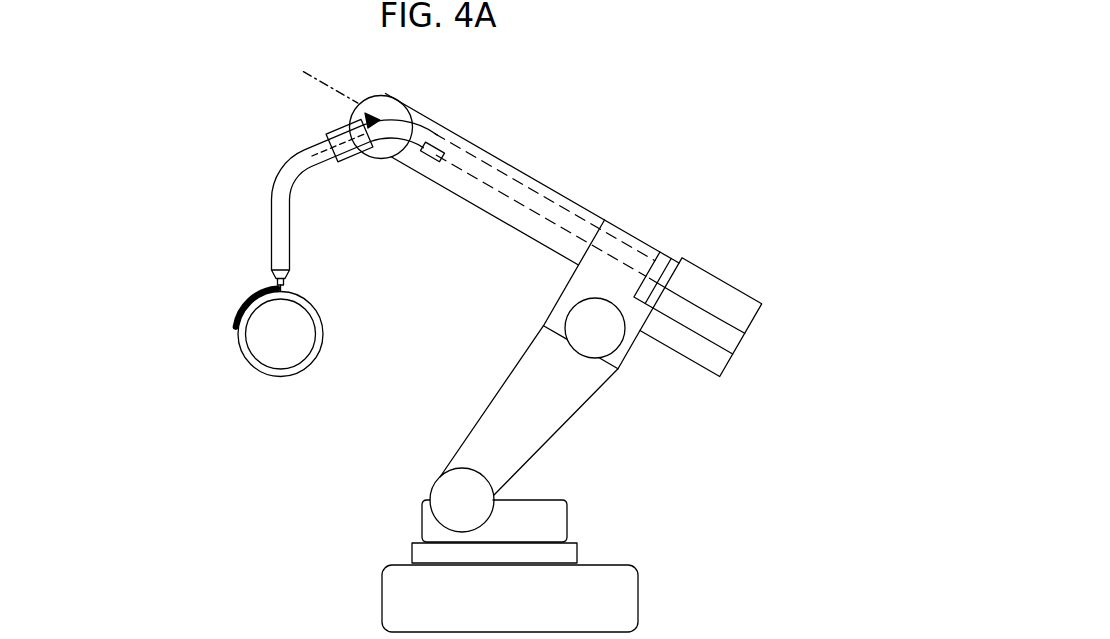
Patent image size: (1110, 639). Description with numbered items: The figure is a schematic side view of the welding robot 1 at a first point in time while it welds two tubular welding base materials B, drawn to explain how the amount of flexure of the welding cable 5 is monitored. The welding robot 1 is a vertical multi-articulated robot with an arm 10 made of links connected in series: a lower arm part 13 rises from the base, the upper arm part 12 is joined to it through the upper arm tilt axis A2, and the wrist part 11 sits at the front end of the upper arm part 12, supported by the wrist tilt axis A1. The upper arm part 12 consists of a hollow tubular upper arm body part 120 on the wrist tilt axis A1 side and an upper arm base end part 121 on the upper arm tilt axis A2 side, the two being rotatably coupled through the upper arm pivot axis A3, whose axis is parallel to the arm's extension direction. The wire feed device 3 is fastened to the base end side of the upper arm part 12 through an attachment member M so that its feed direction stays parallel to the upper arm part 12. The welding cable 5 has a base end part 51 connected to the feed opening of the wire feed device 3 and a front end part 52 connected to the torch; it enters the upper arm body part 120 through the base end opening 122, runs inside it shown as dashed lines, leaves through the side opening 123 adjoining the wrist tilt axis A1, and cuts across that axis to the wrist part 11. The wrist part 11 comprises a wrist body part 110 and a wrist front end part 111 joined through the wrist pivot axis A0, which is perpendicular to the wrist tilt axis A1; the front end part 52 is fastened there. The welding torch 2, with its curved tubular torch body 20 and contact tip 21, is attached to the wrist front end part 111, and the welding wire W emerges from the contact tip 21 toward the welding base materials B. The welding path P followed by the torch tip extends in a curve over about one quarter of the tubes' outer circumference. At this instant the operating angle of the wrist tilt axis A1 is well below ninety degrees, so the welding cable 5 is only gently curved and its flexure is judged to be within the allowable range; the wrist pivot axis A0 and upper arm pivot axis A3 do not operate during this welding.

The welding robot 1 is at (123, 124).
The welding torch 2 is at (271, 215).
The wire feed device 3 is at (730, 283).
The welding cable 5 is at (530, 180).
The arm 10 is at (521, 322).
The wrist part 11 is at (360, 171).
The upper arm part 12 is at (494, 132).
The lower arm part 13 is at (553, 392).
The torch body 20 is at (272, 194).
The contact tip 21 is at (272, 277).
The base end part 51 is at (746, 332).
The front end part 52 is at (322, 136).
The wrist body part 110 is at (357, 158).
The wrist front end part 111 is at (343, 167).
The upper arm body part 120 is at (508, 212).
The upper arm base end part 121 is at (636, 240).
The base end opening 122 is at (663, 259).
The side opening 123 is at (427, 160).
The wrist pivot axis A0 is at (331, 126).
The wrist tilt axis A1 is at (391, 110).
The upper arm tilt axis A2 is at (608, 333).
The upper arm pivot axis A3 is at (606, 217).
The welding base materials B is at (310, 372).
The attachment member M is at (715, 358).
The welding path P is at (243, 313).
The welding wire W is at (286, 286).